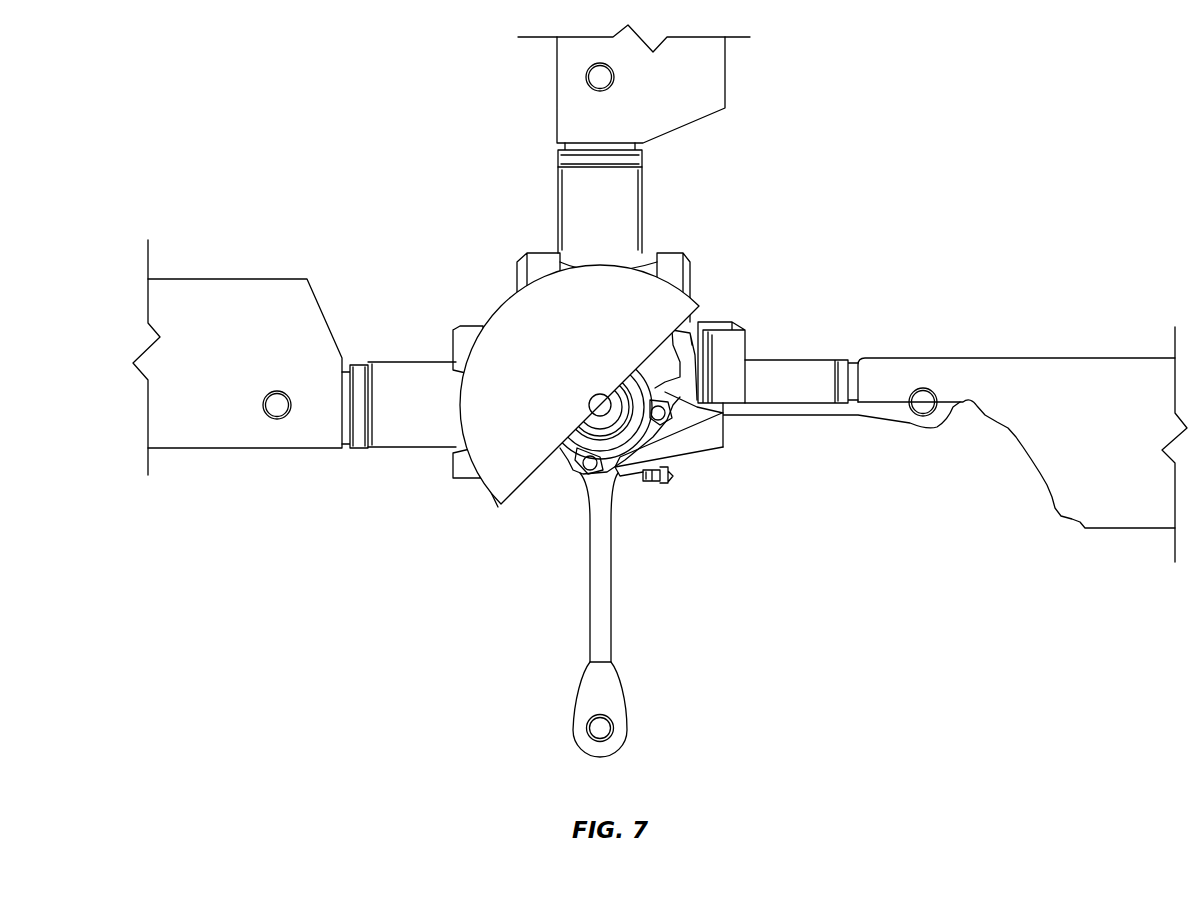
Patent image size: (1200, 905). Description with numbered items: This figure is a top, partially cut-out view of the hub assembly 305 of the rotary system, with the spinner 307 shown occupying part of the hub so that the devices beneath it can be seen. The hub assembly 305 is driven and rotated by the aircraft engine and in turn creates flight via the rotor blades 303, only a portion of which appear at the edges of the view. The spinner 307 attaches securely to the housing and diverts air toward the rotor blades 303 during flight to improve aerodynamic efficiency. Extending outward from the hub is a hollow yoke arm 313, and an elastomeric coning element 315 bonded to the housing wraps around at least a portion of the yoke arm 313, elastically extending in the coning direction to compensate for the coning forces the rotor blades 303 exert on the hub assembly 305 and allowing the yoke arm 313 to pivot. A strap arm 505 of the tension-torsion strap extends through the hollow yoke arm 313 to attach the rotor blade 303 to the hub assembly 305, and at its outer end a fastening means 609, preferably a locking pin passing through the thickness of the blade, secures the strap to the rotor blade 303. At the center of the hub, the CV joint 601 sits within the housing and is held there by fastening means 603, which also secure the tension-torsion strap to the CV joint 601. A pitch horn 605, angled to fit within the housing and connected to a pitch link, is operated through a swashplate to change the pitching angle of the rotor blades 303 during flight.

The rotor blades 303 is at (955, 439).
The hub assembly 305 is at (391, 221).
The spinner 307 is at (521, 345).
The yoke arm 313 is at (778, 358).
The elastomeric coning element 315 is at (742, 318).
The strap arms 505 is at (614, 607).
The CV joint 601 is at (621, 480).
The fastening means 603 is at (583, 476).
The pitch horn 605 is at (698, 458).
The fastening means 609 is at (928, 415).